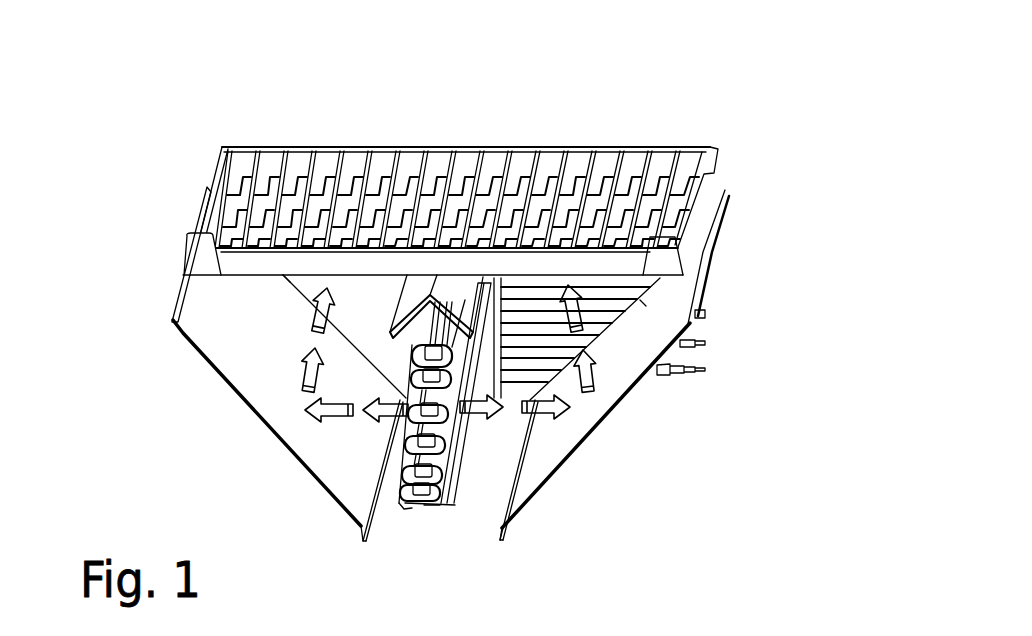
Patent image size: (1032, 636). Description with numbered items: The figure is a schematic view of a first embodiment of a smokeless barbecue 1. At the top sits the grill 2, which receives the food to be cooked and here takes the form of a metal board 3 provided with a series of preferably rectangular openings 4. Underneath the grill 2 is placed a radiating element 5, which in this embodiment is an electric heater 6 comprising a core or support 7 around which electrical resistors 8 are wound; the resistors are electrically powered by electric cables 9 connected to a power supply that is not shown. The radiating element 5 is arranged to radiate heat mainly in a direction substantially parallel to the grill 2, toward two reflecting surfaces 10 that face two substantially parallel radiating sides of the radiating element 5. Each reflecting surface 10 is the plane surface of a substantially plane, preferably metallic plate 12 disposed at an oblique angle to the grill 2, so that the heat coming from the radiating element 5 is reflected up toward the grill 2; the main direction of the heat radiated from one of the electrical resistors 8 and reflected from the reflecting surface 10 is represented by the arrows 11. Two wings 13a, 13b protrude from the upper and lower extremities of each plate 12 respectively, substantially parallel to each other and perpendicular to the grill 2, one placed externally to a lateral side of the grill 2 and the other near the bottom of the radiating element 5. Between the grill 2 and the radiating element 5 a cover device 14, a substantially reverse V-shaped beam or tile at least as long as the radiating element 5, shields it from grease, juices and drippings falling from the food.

The smokeless barbecue 1 is at (250, 100).
The grill 2 is at (655, 126).
The metal board 3 is at (700, 188).
The openings 4 is at (229, 211).
The radiating element 5 is at (407, 503).
The electric heater 6 is at (462, 513).
The core or support 7 is at (433, 490).
The electrical resistors 8 is at (410, 387).
The electric cables 9 is at (700, 318).
The reflecting surface 10 is at (220, 352).
The arrows 11 is at (547, 423).
The plate 12 is at (243, 423).
The wing 13a is at (180, 277).
The wing 13b is at (361, 528).
The cover device 14 is at (461, 294).